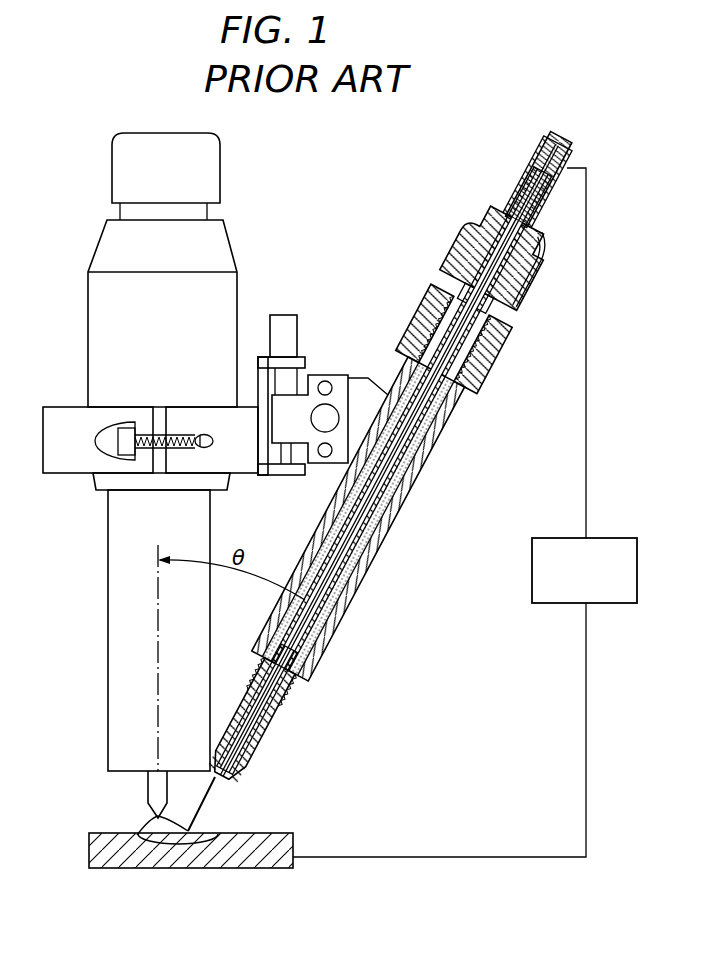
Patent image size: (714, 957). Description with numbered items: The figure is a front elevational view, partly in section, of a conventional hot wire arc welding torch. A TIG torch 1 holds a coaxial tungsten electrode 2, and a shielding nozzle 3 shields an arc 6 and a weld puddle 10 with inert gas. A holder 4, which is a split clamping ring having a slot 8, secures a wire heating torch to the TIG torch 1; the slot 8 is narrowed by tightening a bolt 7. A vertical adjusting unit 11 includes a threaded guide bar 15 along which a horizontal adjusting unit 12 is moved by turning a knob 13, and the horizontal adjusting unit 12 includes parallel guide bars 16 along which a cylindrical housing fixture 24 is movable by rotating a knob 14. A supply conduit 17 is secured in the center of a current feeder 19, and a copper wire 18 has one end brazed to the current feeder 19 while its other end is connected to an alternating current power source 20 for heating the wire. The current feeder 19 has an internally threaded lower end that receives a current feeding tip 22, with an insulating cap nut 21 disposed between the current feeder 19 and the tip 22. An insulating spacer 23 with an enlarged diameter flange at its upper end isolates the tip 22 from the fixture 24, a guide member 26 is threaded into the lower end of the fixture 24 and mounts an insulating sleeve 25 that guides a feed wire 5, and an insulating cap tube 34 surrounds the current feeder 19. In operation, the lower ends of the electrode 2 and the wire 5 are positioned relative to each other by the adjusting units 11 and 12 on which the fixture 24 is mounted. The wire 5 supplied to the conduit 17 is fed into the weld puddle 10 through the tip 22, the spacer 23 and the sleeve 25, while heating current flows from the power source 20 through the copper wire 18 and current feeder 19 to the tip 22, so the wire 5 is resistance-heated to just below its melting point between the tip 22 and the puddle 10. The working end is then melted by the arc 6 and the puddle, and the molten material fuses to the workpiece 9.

The TIG torch 1 is at (130, 243).
The tungsten electrode 2 is at (148, 792).
The shielding nozzle 3 is at (110, 660).
The holder 4 is at (62, 455).
The feed wire 5 is at (213, 797).
The arc 6 is at (148, 828).
The bolt 7 is at (118, 440).
The slot 8 is at (153, 502).
The workpiece 9 is at (128, 860).
The weld puddle 10 is at (184, 850).
The vertical adjusting unit 11 is at (287, 360).
The horizontal adjusting unit 12 is at (285, 470).
The knob 13 is at (283, 318).
The knob 14 is at (337, 405).
The threaded guide bar 15 is at (268, 382).
The parallel guide bars 16 is at (298, 430).
The supply conduit 17 is at (556, 133).
The copper wire 18 is at (572, 158).
The current feeder 19 is at (466, 242).
The alternating current power source 20 is at (626, 538).
The insulating cap nut 21 is at (503, 370).
The current feeding tip 22 is at (430, 415).
The insulating spacer 23 is at (366, 540).
The cylindrical housing fixture 24 is at (343, 620).
The insulating sleeve 25 is at (285, 706).
The guide member 26 is at (267, 735).
The insulating cap tube 34 is at (527, 285).